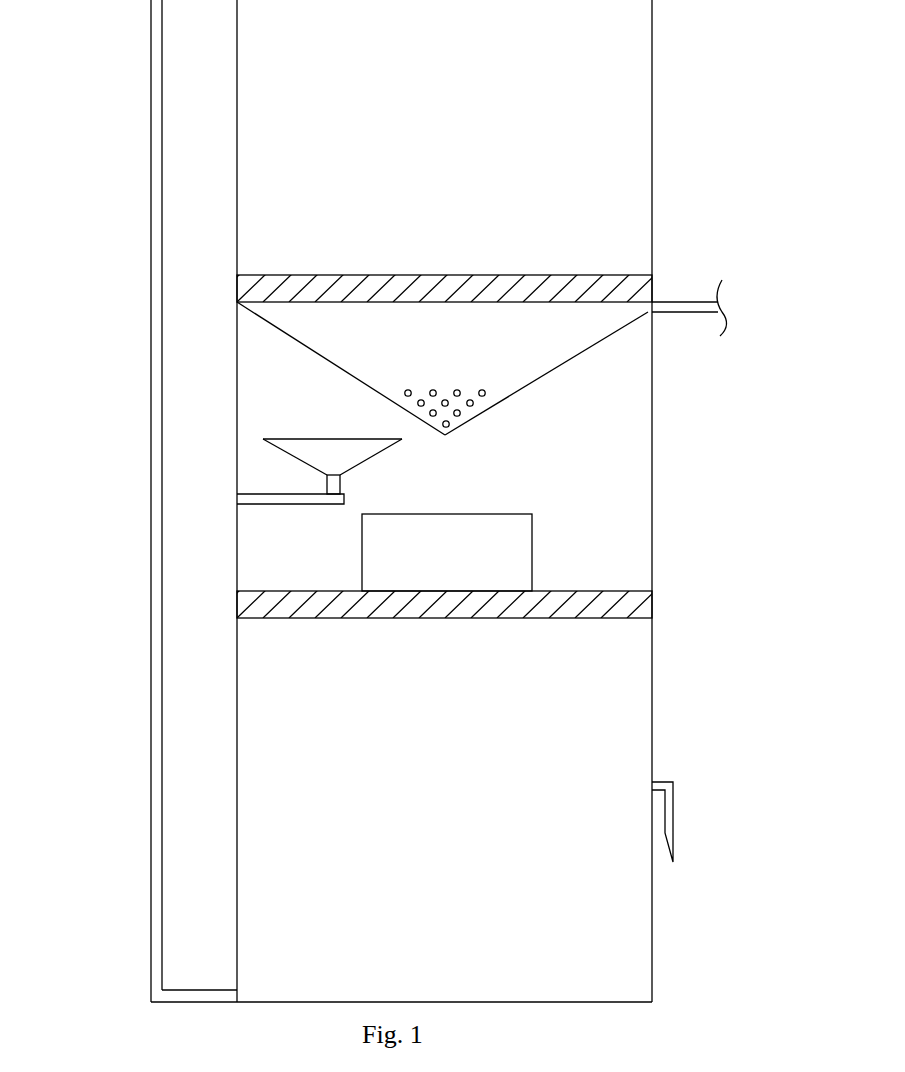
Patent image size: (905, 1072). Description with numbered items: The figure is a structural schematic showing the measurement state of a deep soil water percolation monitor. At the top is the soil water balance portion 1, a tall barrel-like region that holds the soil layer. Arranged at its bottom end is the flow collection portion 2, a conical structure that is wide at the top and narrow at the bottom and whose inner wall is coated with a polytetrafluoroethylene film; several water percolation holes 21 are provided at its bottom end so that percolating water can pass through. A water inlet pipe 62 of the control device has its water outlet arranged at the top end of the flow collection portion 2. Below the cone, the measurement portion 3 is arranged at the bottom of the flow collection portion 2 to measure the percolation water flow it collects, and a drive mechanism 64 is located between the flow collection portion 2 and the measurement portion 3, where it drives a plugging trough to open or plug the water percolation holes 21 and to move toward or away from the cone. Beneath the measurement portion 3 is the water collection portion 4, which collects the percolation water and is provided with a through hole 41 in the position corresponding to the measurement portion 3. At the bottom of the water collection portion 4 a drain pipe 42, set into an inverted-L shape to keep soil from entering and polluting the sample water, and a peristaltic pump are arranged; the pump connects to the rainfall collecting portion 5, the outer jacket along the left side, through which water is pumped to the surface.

The soil water balance portion 1 is at (300, 113).
The flow collection portion 2 is at (340, 345).
The water percolation hole 21 is at (427, 414).
The measurement portion 3 is at (500, 556).
The water collection portion 4 is at (305, 768).
The through hole 41 is at (445, 597).
The drain pipe 42 is at (668, 808).
The rainfall collecting portion 5 is at (162, 540).
The water inlet pipe 62 is at (690, 305).
The drive mechanism 64 is at (318, 470).